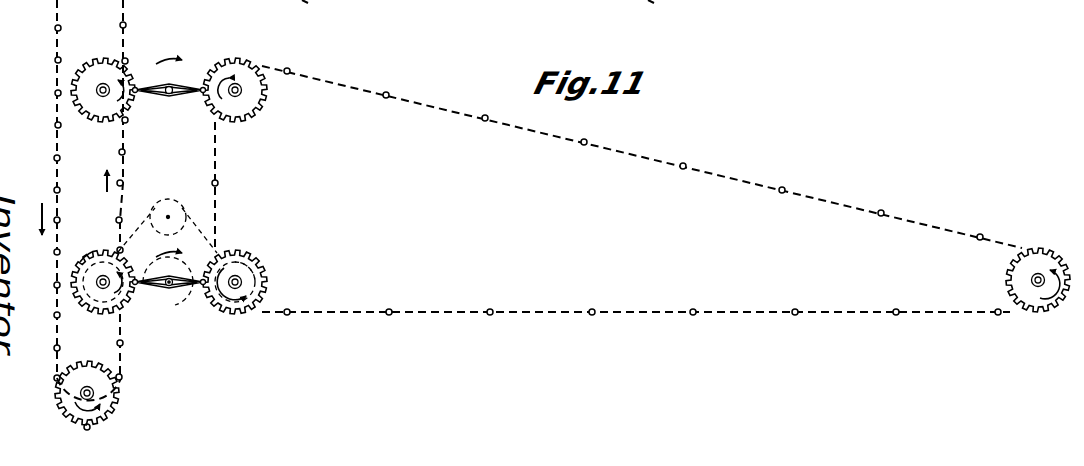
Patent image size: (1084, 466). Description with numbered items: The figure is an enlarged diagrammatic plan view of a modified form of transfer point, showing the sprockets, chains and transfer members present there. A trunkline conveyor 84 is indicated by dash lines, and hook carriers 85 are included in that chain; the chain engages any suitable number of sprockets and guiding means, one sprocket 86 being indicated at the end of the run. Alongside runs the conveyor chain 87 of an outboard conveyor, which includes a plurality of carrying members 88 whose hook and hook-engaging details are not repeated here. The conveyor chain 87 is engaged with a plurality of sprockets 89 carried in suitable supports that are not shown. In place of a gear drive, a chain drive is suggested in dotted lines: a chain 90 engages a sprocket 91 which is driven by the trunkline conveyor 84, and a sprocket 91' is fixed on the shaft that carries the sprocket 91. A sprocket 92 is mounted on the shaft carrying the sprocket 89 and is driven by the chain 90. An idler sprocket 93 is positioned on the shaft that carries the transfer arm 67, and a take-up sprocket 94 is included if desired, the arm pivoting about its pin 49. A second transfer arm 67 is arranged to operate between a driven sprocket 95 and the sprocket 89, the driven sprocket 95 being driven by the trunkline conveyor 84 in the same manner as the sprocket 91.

The pivot pin 49 is at (169, 96).
The transfer arm 67 is at (188, 84).
The trunkline conveyor 84 is at (56, 52).
The hook carriers 85 is at (57, 94).
The sprocket 86 is at (118, 397).
The conveyor chain 87 is at (336, 78).
The carrying members 88 is at (388, 94).
The sprockets 89 is at (252, 101).
The chain 90 is at (203, 216).
The sprocket 91 is at (100, 293).
The sprocket 91' is at (85, 236).
The sprocket 92 is at (268, 281).
The idler sprocket 93 is at (171, 296).
The take-up sprocket 94 is at (176, 206).
The driven sprocket 95 is at (100, 62).